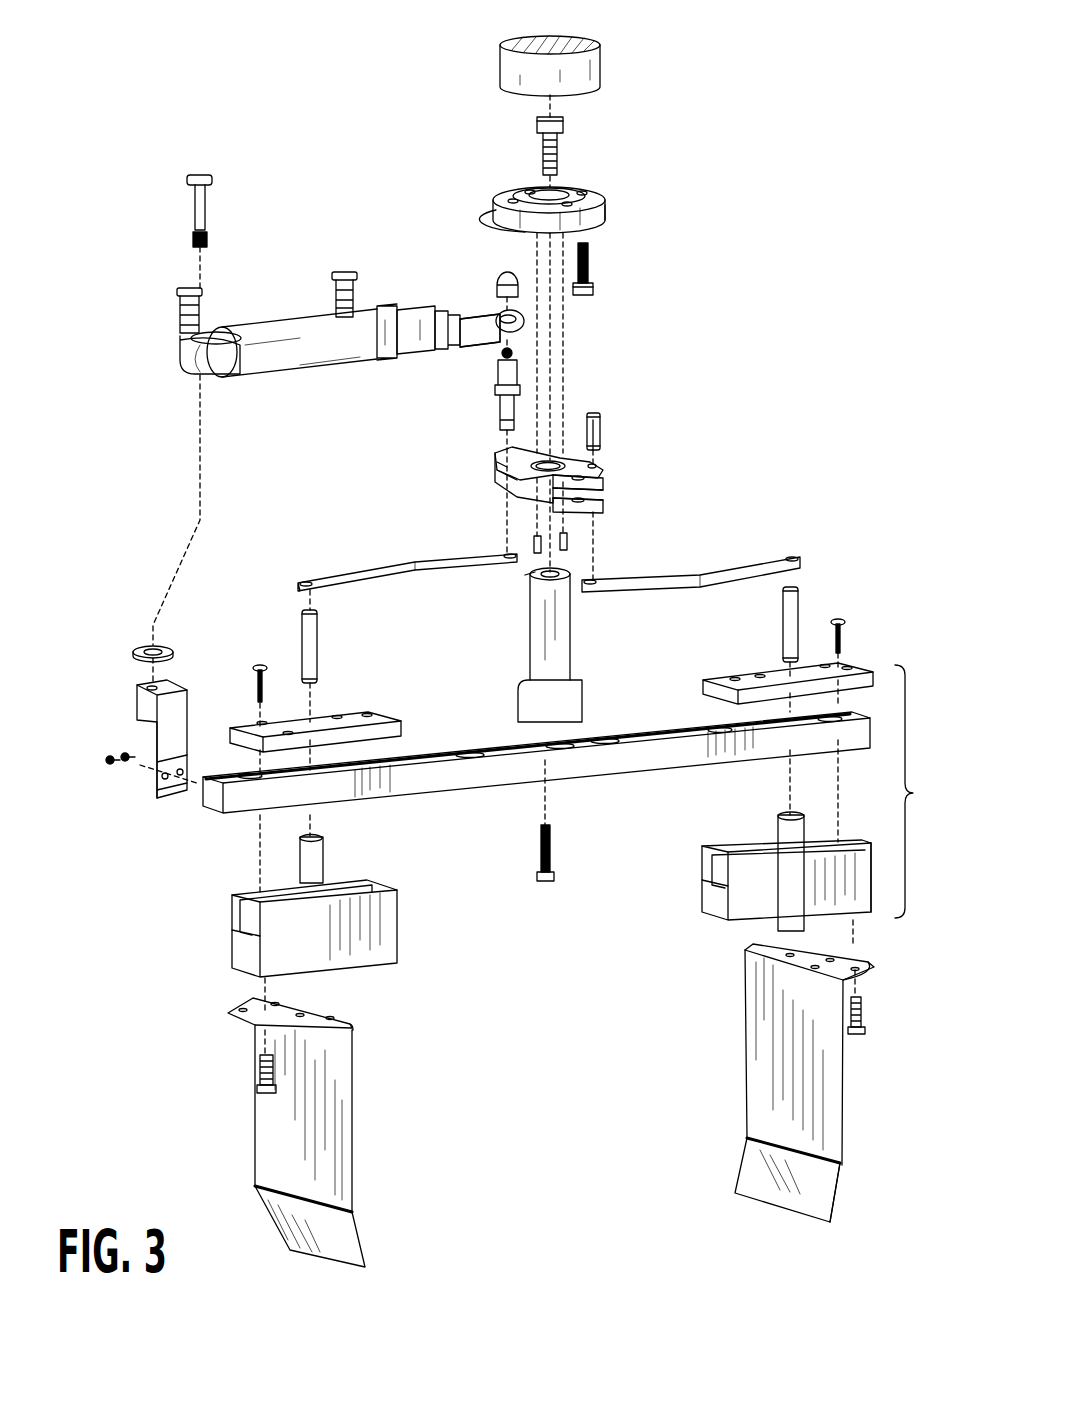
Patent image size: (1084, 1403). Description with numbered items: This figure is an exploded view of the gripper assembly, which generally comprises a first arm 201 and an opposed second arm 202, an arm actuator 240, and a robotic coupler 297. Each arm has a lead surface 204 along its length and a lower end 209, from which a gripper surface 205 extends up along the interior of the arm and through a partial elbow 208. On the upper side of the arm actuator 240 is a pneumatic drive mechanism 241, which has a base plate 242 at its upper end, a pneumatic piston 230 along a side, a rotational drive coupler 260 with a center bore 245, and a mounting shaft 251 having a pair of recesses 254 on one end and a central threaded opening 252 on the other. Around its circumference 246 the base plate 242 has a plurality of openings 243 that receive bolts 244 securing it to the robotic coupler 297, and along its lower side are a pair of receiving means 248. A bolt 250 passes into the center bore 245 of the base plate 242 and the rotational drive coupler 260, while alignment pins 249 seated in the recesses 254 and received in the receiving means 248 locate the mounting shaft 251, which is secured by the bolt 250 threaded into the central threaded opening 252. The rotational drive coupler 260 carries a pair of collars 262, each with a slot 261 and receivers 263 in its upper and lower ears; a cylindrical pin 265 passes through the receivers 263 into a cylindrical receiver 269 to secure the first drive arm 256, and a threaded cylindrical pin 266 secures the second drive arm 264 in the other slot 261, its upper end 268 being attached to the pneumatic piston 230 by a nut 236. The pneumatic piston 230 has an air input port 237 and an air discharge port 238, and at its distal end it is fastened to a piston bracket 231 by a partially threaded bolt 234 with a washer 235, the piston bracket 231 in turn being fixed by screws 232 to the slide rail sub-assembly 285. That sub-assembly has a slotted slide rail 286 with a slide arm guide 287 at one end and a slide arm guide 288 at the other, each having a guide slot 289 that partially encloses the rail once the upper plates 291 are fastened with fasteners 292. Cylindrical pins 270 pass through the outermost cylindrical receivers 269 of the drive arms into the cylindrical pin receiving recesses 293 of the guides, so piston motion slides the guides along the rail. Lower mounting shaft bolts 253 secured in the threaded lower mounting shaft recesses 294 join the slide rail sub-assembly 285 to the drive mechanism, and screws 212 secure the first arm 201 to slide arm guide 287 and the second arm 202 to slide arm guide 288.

The first arm 201 is at (850, 1105).
The second arm 202 is at (290, 1125).
The lead surface 204 is at (275, 1160).
The gripper surface 205 is at (768, 1195).
The partial elbow 208 is at (355, 1210).
The lower end 209 is at (830, 1232).
The screws 212 is at (260, 1068).
The pneumatic piston 230 is at (275, 330).
The piston bracket 231 is at (145, 712).
The screws 232 is at (112, 755).
The partially threaded bolt 234 is at (190, 190).
The washer 235 is at (145, 648).
The nut 236 is at (495, 280).
The air input port 237 is at (178, 318).
The air discharge port 238 is at (335, 275).
The arm actuator 240 is at (728, 444).
The pneumatic drive mechanism 241 is at (375, 297).
The base plate 242 is at (605, 200).
The openings 243 is at (583, 193).
The bolts 244 is at (593, 290).
The center bore 245 is at (530, 192).
The circumference 246 is at (605, 215).
The receiving means 248 is at (525, 233).
The alignment pins 249 is at (570, 540).
The bolt 250 is at (563, 126).
The mounting shaft 251 is at (570, 650).
The central threaded opening 252 is at (528, 570).
The lower mounting shaft bolts 253 is at (548, 882).
The recesses 254 is at (563, 575).
The first drive arm 256 is at (745, 570).
The rotational drive coupler 260 is at (496, 476).
The slot 261 is at (560, 492).
The collars 262 is at (602, 503).
The receivers 263 is at (500, 452).
The second drive arm 264 is at (365, 570).
The cylindrical pin 265 is at (600, 420).
The threaded cylindrical pin 266 is at (497, 392).
The upper end 268 is at (500, 355).
The cylindrical receivers 269 is at (300, 583).
The cylindrical pins 270 is at (305, 625).
The slide rail sub-assembly 285 is at (926, 791).
The slotted slide rail 286 is at (455, 795).
The slide arm guide 287 is at (868, 905).
The slide arm guide 288 is at (232, 950).
The guide slot 289 is at (238, 900).
The upper plates 291 is at (380, 718).
The fasteners 292 is at (260, 665).
The cylindrical pin receiving recesses 293 is at (318, 840).
The threaded lower mounting shaft recesses 294 is at (565, 733).
The robotic coupler 297 is at (600, 44).